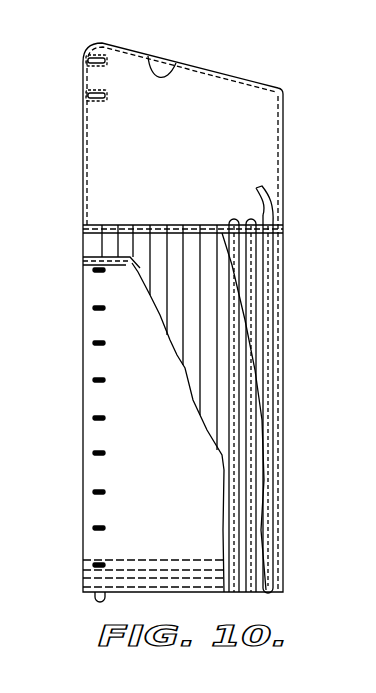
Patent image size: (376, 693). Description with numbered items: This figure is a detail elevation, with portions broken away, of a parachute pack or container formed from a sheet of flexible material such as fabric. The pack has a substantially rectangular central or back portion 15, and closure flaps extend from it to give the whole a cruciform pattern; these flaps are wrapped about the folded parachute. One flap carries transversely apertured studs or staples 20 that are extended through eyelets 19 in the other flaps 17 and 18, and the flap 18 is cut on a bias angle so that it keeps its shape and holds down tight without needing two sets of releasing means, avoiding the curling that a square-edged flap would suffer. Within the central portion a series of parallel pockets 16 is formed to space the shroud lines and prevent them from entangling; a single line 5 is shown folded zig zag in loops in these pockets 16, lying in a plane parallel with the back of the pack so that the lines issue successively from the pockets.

The single line 5 is at (276, 201).
The central or back portion 15 is at (285, 337).
The dividers 16 is at (195, 225).
The flap 17 is at (143, 470).
The flap 18 is at (158, 66).
The eyelets 19 is at (88, 96).
The studs or staples 20 is at (97, 600).